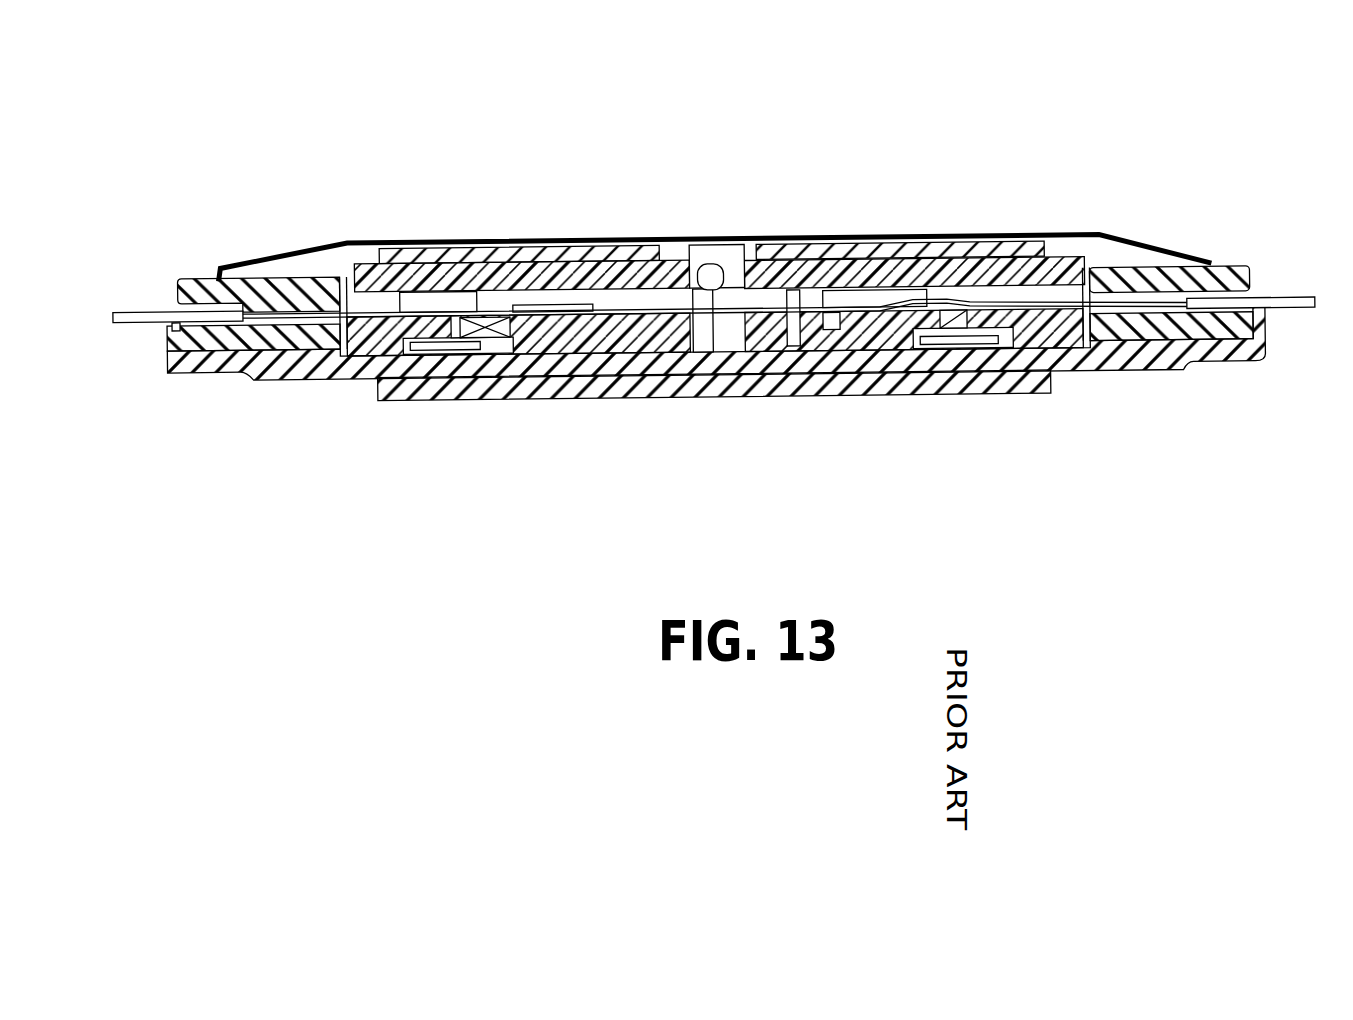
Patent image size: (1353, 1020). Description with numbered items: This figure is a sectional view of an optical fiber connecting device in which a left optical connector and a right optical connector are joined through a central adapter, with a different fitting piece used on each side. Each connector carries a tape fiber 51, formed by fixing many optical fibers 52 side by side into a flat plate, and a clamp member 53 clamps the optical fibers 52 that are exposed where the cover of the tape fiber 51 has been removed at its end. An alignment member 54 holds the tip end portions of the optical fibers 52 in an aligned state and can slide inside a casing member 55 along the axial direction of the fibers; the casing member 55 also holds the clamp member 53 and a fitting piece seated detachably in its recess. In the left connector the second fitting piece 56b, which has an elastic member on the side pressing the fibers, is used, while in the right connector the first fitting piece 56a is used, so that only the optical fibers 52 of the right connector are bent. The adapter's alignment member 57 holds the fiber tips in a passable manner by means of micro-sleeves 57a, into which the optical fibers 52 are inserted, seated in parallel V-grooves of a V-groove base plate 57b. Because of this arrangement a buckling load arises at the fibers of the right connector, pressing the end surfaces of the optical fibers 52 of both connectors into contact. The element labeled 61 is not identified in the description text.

The tape fiber 51 is at (137, 297).
The optical fiber 52 is at (450, 307).
The clamp member 53 is at (268, 273).
The alignment member 54 is at (580, 344).
The casing member 55 is at (546, 271).
The first fitting piece 56a is at (962, 259).
The second fitting piece 56b is at (345, 258).
The alignment member 57 is at (663, 380).
The micro-sleeve 57a is at (745, 300).
The V-groove base plate 57b is at (742, 346).
The cover plate 61 is at (353, 239).